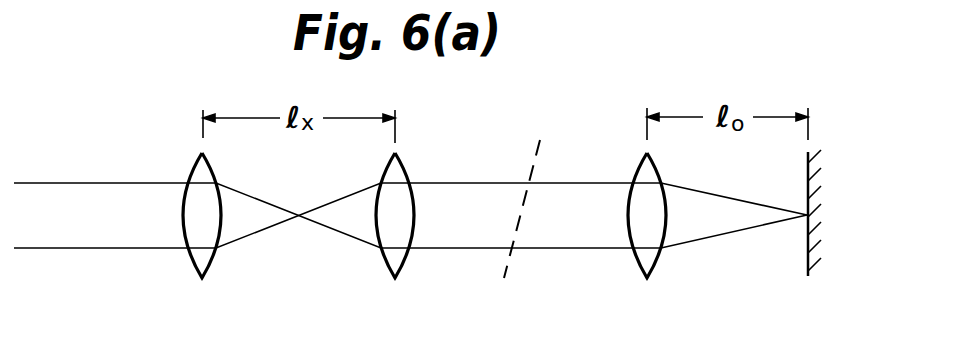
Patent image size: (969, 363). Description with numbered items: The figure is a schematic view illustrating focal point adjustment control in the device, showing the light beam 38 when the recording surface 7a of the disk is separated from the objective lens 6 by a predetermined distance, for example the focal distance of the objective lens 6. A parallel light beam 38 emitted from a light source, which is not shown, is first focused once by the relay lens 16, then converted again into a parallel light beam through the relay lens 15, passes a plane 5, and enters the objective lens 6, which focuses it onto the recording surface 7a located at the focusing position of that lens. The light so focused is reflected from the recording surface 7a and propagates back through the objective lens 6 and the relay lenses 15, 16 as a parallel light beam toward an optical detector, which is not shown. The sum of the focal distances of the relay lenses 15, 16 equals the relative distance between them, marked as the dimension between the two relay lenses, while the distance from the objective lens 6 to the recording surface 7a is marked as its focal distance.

The light beam 38 is at (78, 183).
The relay lens 16 is at (194, 262).
The relay lens 15 is at (384, 262).
The plane 5 is at (532, 160).
The objective lens 6 is at (642, 262).
The recording surface 7a is at (806, 255).